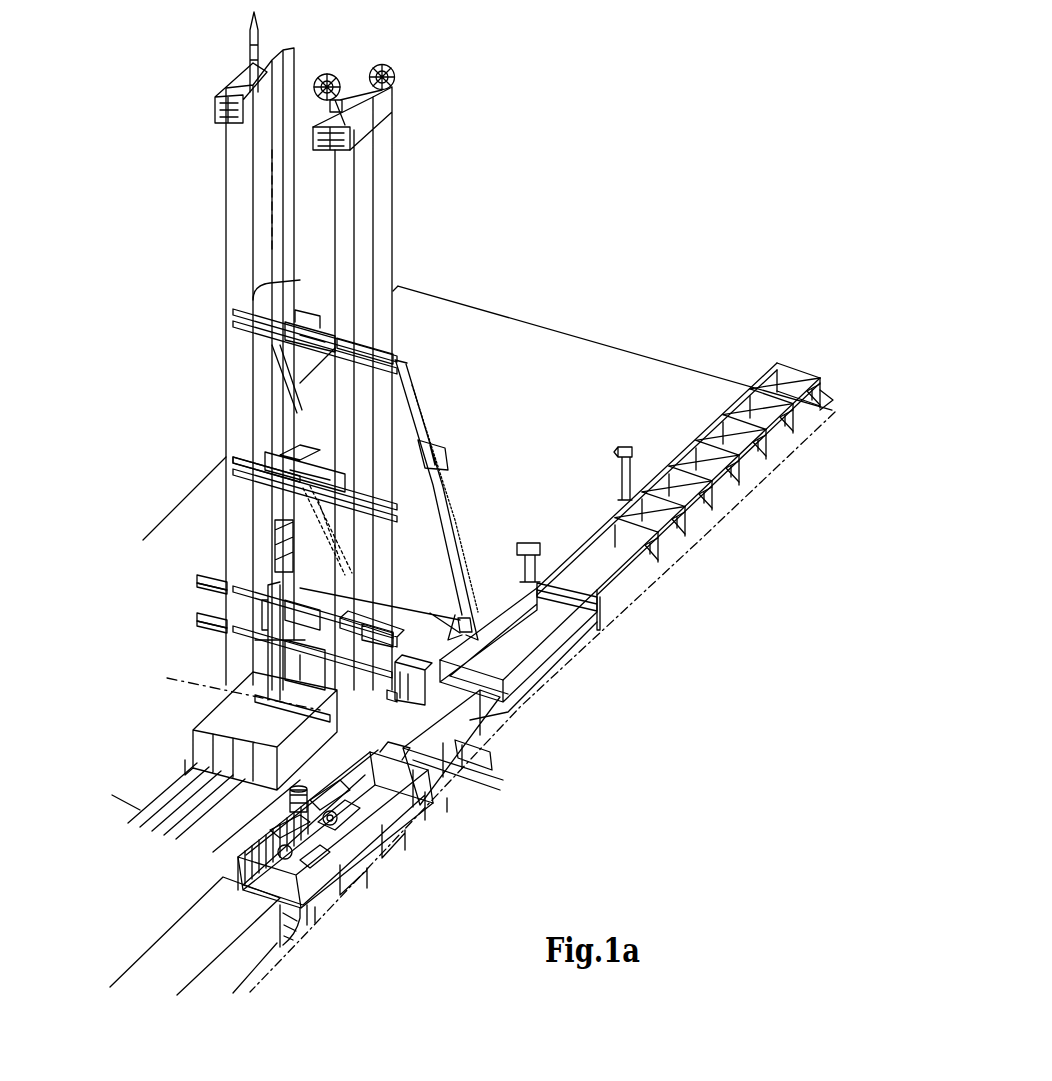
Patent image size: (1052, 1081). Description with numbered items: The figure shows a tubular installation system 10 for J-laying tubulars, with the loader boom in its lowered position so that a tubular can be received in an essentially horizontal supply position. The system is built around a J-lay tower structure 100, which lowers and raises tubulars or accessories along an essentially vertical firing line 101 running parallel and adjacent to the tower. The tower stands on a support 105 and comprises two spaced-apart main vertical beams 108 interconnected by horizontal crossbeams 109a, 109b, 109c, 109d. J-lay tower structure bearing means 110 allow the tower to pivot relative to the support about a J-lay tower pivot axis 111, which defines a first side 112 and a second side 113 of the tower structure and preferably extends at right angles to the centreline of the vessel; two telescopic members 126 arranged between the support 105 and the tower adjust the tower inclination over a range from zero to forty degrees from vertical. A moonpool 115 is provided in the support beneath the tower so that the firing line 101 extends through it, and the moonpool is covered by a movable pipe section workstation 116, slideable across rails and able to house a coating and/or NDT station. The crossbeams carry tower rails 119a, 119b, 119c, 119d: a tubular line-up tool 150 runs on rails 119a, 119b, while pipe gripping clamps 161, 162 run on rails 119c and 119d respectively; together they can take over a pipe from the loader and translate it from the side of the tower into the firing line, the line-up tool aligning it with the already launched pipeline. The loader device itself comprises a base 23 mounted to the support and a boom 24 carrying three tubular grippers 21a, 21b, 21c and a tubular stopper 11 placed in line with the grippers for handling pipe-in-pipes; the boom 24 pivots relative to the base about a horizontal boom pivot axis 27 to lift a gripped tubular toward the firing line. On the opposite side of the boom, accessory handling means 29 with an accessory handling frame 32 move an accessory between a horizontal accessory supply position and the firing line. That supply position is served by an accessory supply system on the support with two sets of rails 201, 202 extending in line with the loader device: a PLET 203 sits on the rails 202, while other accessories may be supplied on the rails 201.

The tubular installation system 10 is at (622, 656).
The J-lay tower structure 100 is at (423, 168).
The firing line 101 is at (277, 250).
The support 105 is at (447, 387).
The main vertical beams 108 is at (305, 351).
The horizontal crossbeam 109a is at (210, 620).
The horizontal crossbeam 109b is at (215, 577).
The horizontal crossbeam 109c is at (257, 457).
The horizontal crossbeam 109d is at (257, 313).
The J-lay tower structure bearing means 110 is at (373, 733).
The J-lay tower pivot axis 111 is at (180, 677).
The first side of the J-lay tower structure 112 is at (380, 646).
The second side of the J-lay tower structure 113 is at (134, 652).
The moonpool 115 is at (385, 629).
The movable pipe section workstation 116 is at (210, 720).
The tower rail 119a is at (208, 630).
The tower rail 119b is at (197, 585).
The tower rail 119c is at (247, 473).
The tower rail 119d is at (390, 358).
The telescopic members 126 is at (450, 543).
The tubular line-up tool 150 is at (322, 598).
The pipe gripping clamp 161 is at (300, 460).
The pipe gripping clamp 162 is at (307, 333).
The accessory supply rails 201 is at (683, 517).
The accessory supply rails 202 is at (322, 878).
The PLET 203 is at (355, 827).
The tubular gripper 21a is at (625, 445).
The tubular gripper 21b is at (526, 543).
The tubular gripper 21c is at (413, 677).
The base 23 is at (457, 760).
The boom 24 is at (603, 563).
The horizontal boom pivot axis 27 is at (463, 753).
The accessory handling means 29 is at (557, 660).
The accessory handling frame 32 is at (577, 610).
The tubular stopper 11 is at (395, 683).